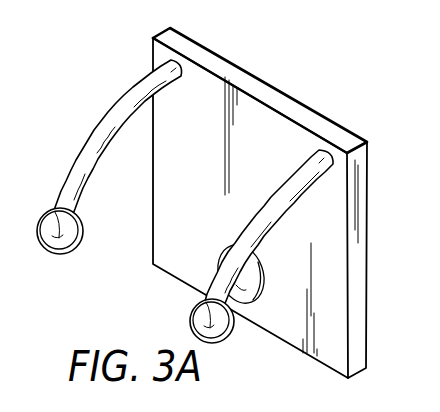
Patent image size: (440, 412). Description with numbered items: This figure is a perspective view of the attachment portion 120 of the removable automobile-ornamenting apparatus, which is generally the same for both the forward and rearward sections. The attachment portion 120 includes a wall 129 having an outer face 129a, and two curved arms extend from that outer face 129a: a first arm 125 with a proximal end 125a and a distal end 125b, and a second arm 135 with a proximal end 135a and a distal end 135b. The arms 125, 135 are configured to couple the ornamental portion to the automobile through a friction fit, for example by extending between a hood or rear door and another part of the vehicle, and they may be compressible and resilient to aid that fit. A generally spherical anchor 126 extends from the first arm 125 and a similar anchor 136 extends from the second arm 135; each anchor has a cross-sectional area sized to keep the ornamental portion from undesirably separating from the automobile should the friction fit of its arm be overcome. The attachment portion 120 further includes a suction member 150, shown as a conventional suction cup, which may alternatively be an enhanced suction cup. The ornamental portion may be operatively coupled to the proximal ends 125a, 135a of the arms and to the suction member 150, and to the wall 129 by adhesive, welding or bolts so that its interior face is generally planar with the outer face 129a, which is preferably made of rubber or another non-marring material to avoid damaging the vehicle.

The attachment portion 120 is at (257, 197).
The first arm 125 is at (109, 160).
The first arm proximal end 125a is at (157, 75).
The first arm distal end 125b is at (66, 203).
The anchor 126 is at (46, 250).
The wall 129 is at (372, 198).
The outer face 129a is at (168, 193).
The second arm 135 is at (280, 230).
The second arm proximal end 135a is at (316, 160).
The second arm distal end 135b is at (219, 343).
The anchor 136 is at (190, 329).
The suction member 150 is at (263, 295).